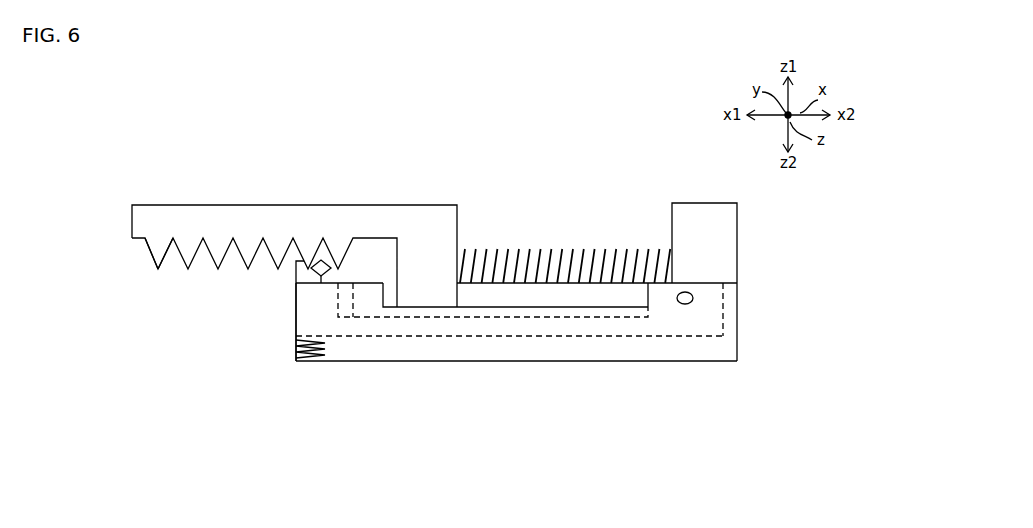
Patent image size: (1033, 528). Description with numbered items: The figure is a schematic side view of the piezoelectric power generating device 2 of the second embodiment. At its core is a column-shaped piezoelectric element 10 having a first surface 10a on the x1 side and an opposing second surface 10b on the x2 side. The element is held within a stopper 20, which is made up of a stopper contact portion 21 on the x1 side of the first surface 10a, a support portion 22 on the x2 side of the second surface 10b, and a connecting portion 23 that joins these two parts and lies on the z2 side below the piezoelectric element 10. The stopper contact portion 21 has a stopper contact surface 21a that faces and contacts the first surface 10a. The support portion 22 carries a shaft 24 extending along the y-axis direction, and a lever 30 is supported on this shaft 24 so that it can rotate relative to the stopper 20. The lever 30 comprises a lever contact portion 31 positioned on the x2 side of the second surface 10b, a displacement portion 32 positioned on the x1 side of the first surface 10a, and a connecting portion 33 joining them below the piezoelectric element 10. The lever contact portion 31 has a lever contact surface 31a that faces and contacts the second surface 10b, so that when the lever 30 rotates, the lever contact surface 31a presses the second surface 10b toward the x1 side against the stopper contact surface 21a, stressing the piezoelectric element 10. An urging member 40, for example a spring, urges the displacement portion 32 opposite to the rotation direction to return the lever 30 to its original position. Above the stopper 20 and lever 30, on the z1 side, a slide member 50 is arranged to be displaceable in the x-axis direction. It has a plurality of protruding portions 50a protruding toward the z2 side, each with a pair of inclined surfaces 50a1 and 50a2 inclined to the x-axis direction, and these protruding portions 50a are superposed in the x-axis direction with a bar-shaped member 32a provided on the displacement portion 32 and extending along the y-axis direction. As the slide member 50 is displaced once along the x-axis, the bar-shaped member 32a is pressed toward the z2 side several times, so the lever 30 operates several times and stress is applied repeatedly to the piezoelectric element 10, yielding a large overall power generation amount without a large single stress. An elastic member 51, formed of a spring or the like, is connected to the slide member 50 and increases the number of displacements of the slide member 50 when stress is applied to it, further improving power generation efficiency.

The piezoelectric power generating device 2 is at (622, 132).
The slide member 50 is at (269, 242).
The protruding portions 50a is at (239, 295).
The inclined surface 50a1 is at (148, 248).
The inclined surface 50a2 is at (165, 262).
The displacement portion 32 is at (341, 277).
The first surface 10a is at (372, 282).
The stopper contact surface 21a is at (398, 298).
The elastic member 51 is at (527, 249).
The lever contact surface 31a is at (647, 296).
The second surface 10b is at (651, 298).
The lever contact portion 31 is at (725, 297).
The support portion 22 is at (738, 332).
The lever 30 is at (295, 279).
The stopper contact portion 21 is at (295, 318).
The urging member 40 is at (303, 363).
The bar-shaped member 32a is at (321, 283).
The connecting portion 33 is at (430, 337).
The piezoelectric element 10 is at (510, 308).
The connecting portion 23 is at (575, 362).
The stopper 20 is at (640, 362).
The shaft 24 is at (686, 305).